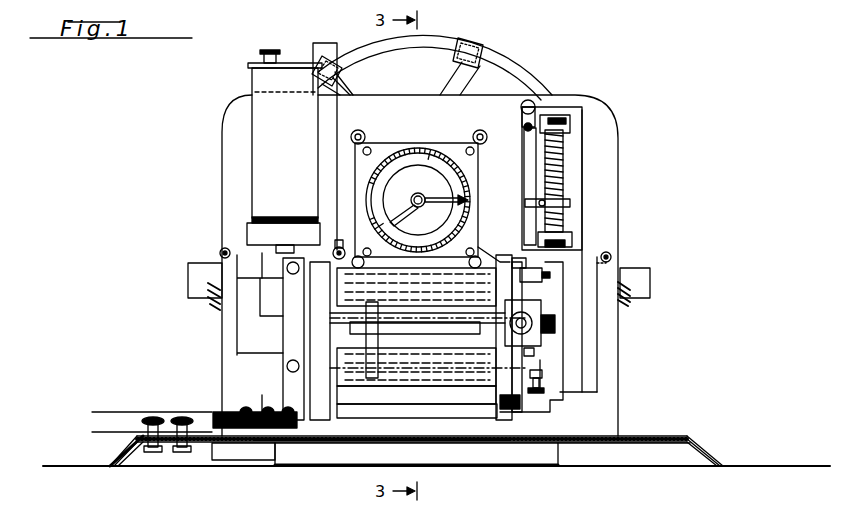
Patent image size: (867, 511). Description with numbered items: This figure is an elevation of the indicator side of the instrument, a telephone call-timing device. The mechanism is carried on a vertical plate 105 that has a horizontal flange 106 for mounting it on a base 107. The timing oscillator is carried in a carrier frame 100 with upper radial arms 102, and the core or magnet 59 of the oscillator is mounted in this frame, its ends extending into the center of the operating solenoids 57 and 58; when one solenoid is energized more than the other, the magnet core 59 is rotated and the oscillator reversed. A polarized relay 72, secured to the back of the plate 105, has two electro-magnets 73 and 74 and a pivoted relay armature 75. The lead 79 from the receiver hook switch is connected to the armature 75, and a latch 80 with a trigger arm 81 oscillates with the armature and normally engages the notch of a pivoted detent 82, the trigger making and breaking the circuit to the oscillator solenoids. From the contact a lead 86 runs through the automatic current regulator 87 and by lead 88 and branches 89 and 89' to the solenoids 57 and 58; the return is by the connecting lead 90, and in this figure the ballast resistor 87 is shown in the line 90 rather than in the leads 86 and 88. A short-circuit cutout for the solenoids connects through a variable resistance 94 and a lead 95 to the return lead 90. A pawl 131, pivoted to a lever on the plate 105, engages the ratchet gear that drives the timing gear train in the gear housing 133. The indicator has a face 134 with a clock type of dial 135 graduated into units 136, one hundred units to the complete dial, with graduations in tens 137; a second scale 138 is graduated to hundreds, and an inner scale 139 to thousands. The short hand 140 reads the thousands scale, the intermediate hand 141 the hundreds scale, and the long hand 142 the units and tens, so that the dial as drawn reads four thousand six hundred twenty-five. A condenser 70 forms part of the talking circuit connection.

The operating solenoid 57 is at (630, 303).
The operating solenoid 58 is at (212, 300).
The core or magnet 59 is at (522, 90).
The condenser 70 is at (525, 467).
The relay 72 is at (400, 408).
The electro-magnet 73 is at (500, 297).
The electro-magnet 74 is at (470, 386).
The relay armature 75 is at (515, 310).
The lead 79 is at (262, 394).
The latch 80 is at (416, 288).
The trigger arm 81 is at (440, 318).
The pivoted detent 82 is at (372, 356).
The lead 86 is at (270, 276).
The automatic current regulator (ballast resistor) 87 is at (247, 172).
The lead 88 is at (270, 442).
The branch lead 89 is at (591, 337).
The branch lead 89' is at (223, 339).
The connecting lead 90 is at (328, 45).
The variable resistance 94 is at (588, 188).
The lead 95 is at (566, 382).
The carrier frame 100 is at (480, 74).
The upper radial arm 102 is at (470, 50).
The vertical plate 105 is at (605, 228).
The horizontal flange 106 is at (608, 435).
The base 107 is at (685, 437).
The pawl 131 is at (487, 250).
The gear housing 133 is at (438, 142).
The indicator face 134 is at (455, 135).
The dial 135 is at (478, 175).
The units 136 is at (408, 145).
The tens graduations 137 is at (470, 190).
The second scale 138 is at (470, 206).
The inner scale 139 is at (398, 190).
The short hand 140 is at (400, 232).
The intermediate hand 141 is at (405, 220).
The long hand 142 is at (480, 162).